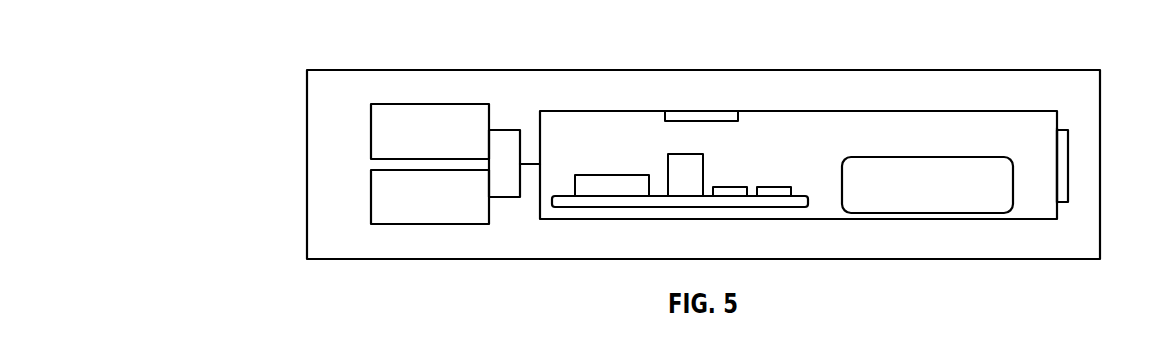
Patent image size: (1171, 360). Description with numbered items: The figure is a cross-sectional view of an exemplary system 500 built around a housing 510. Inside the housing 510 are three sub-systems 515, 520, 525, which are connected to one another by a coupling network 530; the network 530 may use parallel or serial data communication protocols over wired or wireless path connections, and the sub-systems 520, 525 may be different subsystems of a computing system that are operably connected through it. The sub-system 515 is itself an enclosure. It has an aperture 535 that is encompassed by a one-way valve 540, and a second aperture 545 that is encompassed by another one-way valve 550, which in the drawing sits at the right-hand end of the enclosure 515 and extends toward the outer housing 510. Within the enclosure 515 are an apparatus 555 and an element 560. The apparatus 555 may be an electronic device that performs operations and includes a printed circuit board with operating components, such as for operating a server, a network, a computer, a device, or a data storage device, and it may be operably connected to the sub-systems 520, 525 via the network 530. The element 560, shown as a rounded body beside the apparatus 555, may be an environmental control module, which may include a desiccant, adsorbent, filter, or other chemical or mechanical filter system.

The system 500 is at (320, 41).
The housing 510 is at (1033, 70).
The sub-system 515 is at (1000, 111).
The sub-system 520 is at (430, 104).
The sub-system 525 is at (371, 200).
The coupling network 530 is at (505, 130).
The aperture 535 is at (707, 99).
The one-way valve 540 is at (663, 113).
The aperture 545 is at (1050, 172).
The one-way valve 550 is at (1068, 165).
The apparatus 555 is at (756, 170).
The element 560 is at (948, 157).